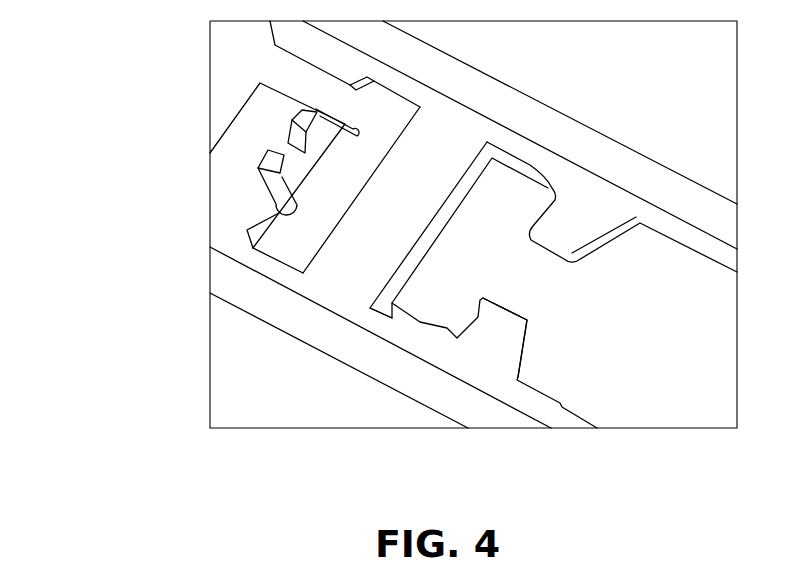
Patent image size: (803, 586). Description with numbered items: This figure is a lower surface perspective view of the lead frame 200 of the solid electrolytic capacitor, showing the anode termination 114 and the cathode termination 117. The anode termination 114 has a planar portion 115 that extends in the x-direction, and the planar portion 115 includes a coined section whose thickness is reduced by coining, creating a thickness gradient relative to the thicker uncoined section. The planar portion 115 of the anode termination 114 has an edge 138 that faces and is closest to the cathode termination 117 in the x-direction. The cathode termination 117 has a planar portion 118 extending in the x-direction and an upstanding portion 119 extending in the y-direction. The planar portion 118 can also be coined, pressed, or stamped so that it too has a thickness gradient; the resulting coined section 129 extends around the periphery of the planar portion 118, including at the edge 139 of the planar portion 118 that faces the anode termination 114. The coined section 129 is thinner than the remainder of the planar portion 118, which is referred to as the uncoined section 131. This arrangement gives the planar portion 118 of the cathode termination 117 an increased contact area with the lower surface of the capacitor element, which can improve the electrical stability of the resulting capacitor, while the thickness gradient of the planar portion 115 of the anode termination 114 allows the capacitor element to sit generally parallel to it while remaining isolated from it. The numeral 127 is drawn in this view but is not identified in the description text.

The lead frame 200 is at (158, 64).
The anode termination 114 is at (247, 229).
The planar portion 115 is at (287, 242).
The cathode termination 117 is at (517, 200).
The planar portion 118 is at (487, 267).
The upstanding portion 119 is at (258, 160).
The pin 127 is at (291, 126).
The coined section 129 is at (399, 317).
The uncoined section 131 is at (435, 312).
The edge 138 is at (340, 225).
The edge 139 is at (428, 227).